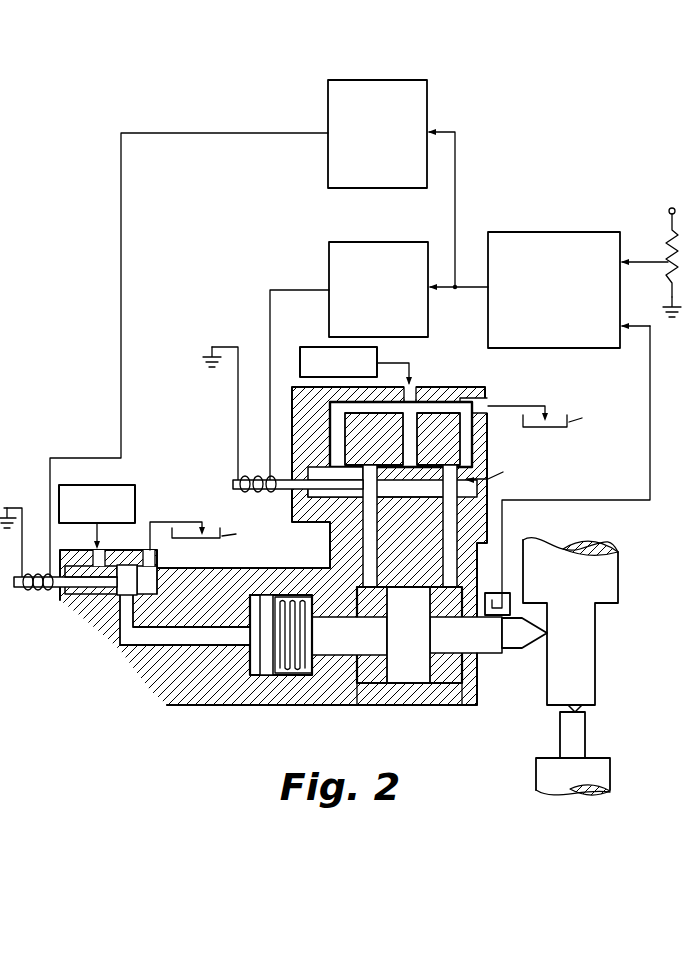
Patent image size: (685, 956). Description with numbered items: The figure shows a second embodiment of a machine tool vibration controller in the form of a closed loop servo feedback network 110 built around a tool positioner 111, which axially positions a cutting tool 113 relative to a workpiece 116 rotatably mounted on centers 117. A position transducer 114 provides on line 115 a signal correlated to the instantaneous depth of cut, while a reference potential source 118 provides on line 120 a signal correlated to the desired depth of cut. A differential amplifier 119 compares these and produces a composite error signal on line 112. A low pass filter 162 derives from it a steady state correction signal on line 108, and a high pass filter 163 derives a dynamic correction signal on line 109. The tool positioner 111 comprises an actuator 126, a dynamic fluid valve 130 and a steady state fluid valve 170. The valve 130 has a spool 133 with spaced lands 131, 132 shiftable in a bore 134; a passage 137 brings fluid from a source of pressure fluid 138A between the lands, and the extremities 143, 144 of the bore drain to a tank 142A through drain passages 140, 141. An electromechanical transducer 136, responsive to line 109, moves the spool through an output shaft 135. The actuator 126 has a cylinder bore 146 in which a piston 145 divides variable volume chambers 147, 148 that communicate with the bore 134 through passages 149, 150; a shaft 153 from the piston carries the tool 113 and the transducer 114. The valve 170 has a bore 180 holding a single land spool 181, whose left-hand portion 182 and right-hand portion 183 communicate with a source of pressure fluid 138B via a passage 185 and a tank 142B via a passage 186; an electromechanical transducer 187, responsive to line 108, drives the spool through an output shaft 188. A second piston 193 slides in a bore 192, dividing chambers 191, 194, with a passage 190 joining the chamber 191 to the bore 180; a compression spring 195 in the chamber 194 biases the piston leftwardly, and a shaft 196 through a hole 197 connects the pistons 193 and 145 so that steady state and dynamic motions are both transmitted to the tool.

The line 108 is at (193, 133).
The line 109 is at (290, 290).
The closed loop servo feedback network 110 is at (367, 50).
The tool positioner 111 is at (118, 693).
The line 112 is at (467, 293).
The cutting tool 113 is at (522, 649).
The position transducer 114 is at (512, 600).
The line 115 is at (650, 483).
The workpiece 116 is at (590, 660).
The centers 117 is at (580, 738).
The reference potential source 118 is at (669, 204).
The differential amplifier 119 is at (575, 232).
The line 120 is at (641, 262).
The actuator 126 is at (402, 713).
The dynamic fluid valve 130 is at (460, 382).
The land 131 is at (374, 439).
The land 132 is at (438, 439).
The spool 133 is at (496, 470).
The bore 134 is at (418, 498).
The output shaft 135 is at (291, 478).
The electromechanical transducer 136 is at (243, 479).
The passage 137 is at (424, 383).
The source of pressure fluid 138A is at (314, 347).
The source of pressure fluid 138B is at (136, 485).
The drain passage 140 is at (330, 408).
The drain passage 141 is at (487, 397).
The tank 142A is at (571, 415).
The tank 142B is at (224, 532).
The extremity of the bore 143 is at (322, 522).
The extremity of the bore 144 is at (470, 493).
The piston 145 is at (408, 635).
The cylinder bore 146 is at (450, 694).
The variable volume chamber 147 is at (360, 709).
The variable volume chamber 148 is at (478, 698).
The passage 149 is at (377, 563).
The passage 150 is at (443, 566).
The shaft 153 is at (466, 635).
The low pass filter 162 is at (429, 80).
The high pass filter 163 is at (391, 242).
The steady state fluid valve 170 is at (73, 625).
The bore 180 is at (152, 595).
The single land spool 181 is at (140, 582).
The left-hand portion 182 is at (80, 588).
The right-hand portion 183 is at (176, 567).
The passage 185 is at (94, 555).
The passage 186 is at (147, 555).
The electromechanical transducer 187 is at (20, 590).
The output shaft 188 is at (112, 600).
The passage 190 is at (148, 641).
The variable volume chamber 191 is at (223, 674).
The bore 192 is at (272, 697).
The piston 193 is at (250, 611).
The variable volume chamber 194 is at (290, 596).
The compression spring 195 is at (313, 633).
The shaft 196 is at (338, 667).
The hole 197 is at (318, 613).